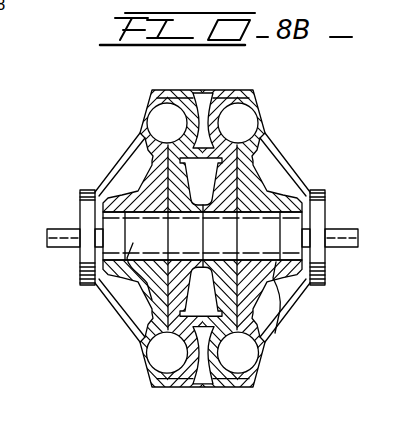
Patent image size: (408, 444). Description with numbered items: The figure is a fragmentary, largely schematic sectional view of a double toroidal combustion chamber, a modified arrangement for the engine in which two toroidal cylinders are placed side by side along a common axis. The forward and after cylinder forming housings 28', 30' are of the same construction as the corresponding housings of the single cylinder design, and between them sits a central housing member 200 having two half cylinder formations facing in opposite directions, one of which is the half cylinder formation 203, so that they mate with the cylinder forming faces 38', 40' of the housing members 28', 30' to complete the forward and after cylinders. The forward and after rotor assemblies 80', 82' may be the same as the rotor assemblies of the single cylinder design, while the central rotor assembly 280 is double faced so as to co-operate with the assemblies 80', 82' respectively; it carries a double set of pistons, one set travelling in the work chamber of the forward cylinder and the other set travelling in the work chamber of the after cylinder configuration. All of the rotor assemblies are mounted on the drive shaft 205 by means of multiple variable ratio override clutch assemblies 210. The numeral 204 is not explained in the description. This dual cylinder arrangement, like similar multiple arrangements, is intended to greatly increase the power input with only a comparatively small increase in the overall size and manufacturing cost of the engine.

The central housing member 200 is at (201, 92).
The half cylinder formation 203 is at (187, 128).
The ball 204 is at (218, 131).
The forward cylinder forming housing 28' is at (112, 164).
The after cylinder forming housing 30' is at (294, 164).
The drive shaft 205 is at (67, 233).
The variable ratio override clutch assemblies 210 is at (118, 278).
The forward rotor assembly 80' is at (115, 315).
The after rotor assembly 82' is at (296, 310).
The central rotor assembly 280 is at (148, 347).
The cylinder forming face 38' is at (204, 340).
The cylinder forming face 40' is at (238, 373).